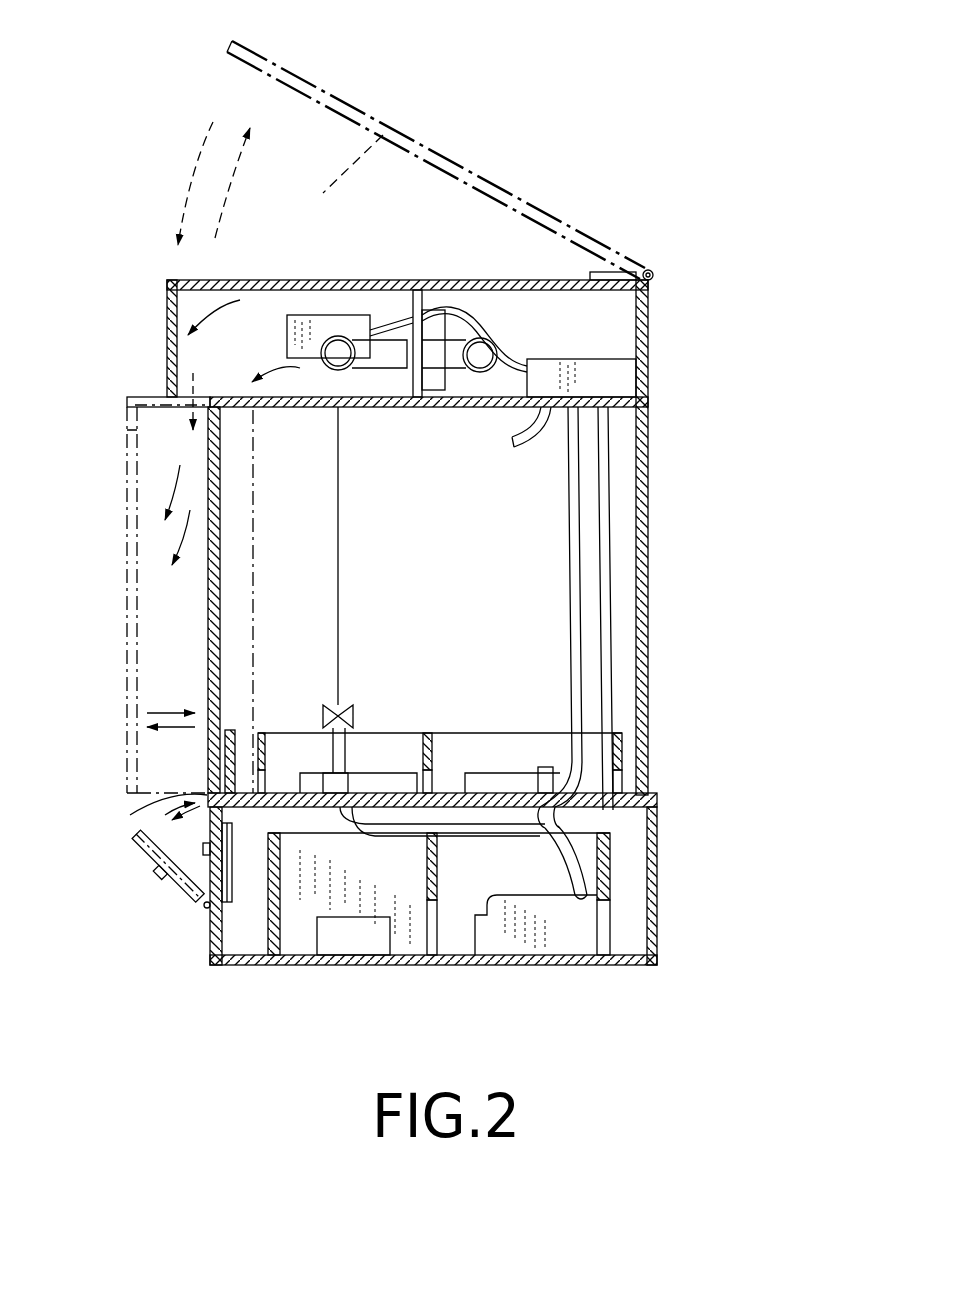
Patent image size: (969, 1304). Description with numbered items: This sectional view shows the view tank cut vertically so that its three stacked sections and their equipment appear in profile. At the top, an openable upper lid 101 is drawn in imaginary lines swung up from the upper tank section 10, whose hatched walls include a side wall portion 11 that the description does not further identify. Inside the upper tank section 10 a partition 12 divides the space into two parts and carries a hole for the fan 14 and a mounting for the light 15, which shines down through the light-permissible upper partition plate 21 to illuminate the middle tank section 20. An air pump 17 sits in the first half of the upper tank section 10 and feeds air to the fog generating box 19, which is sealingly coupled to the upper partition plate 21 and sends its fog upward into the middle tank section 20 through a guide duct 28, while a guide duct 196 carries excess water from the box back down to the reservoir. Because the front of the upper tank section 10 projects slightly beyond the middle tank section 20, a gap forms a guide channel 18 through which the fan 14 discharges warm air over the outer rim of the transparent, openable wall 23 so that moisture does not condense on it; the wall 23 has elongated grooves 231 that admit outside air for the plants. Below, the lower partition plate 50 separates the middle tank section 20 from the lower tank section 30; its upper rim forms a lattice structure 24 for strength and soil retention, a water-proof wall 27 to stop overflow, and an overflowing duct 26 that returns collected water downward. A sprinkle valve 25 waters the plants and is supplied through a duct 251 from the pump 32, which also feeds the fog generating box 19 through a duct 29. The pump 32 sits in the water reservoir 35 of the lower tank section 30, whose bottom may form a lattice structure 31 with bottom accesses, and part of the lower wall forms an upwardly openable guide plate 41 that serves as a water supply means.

The upper tank section 10 is at (656, 345).
The side wall of upper housing 11 is at (170, 337).
The partition 12 is at (418, 290).
The fan 14 is at (437, 312).
The light 15 is at (480, 360).
The air pump 17 is at (293, 343).
The guide channel 18 is at (192, 392).
The fog generating box 19 is at (597, 373).
The middle tank section 20 is at (668, 632).
The upper partition plate 21 is at (497, 405).
The openable wall 23 is at (210, 650).
The lattice structure 24 is at (445, 738).
The sprinkle valve 25 is at (350, 718).
The overflowing duct 26 is at (540, 780).
The water-proof wall 27 is at (228, 735).
The guide duct 28 is at (527, 446).
The duct 29 is at (568, 688).
The lower tank section 30 is at (678, 900).
The lattice structure 31 is at (268, 887).
The pump 32 is at (523, 900).
The water reservoir 35 is at (630, 865).
The guide plate 41 is at (140, 827).
The lower partition plate 50 is at (250, 818).
The upper lid 101 is at (305, 283).
The guide duct 196 is at (610, 515).
The elongated grooves 231 is at (240, 425).
The duct 251 is at (400, 825).